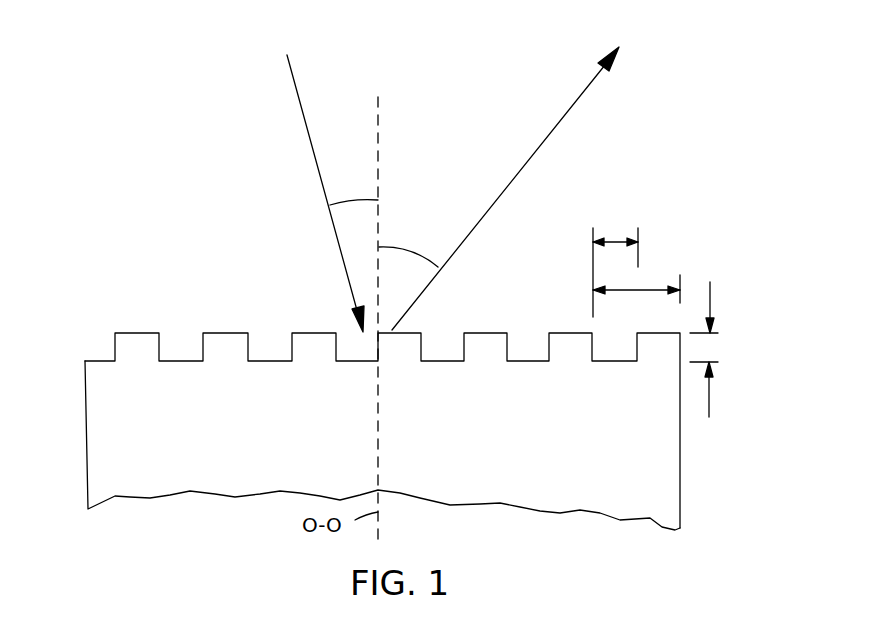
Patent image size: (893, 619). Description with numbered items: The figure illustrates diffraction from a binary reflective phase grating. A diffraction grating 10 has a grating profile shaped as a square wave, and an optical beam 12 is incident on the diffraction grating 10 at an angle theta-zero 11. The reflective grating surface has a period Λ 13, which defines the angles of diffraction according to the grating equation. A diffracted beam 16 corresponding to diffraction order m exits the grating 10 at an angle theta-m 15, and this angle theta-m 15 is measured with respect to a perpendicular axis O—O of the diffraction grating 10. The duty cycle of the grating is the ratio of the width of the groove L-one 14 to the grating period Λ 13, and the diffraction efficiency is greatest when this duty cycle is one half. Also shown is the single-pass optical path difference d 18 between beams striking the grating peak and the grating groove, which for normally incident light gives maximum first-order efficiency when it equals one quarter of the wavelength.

The diffraction grating 10 is at (103, 368).
The angle θ0 11 is at (335, 173).
The optical beam 12 is at (310, 137).
The period Λ 13 is at (668, 275).
The width of the groove L1 14 is at (630, 228).
The angle θm 15 is at (428, 222).
The diffracted beam 16 is at (532, 153).
The single-pass optical path difference d 18 is at (713, 350).